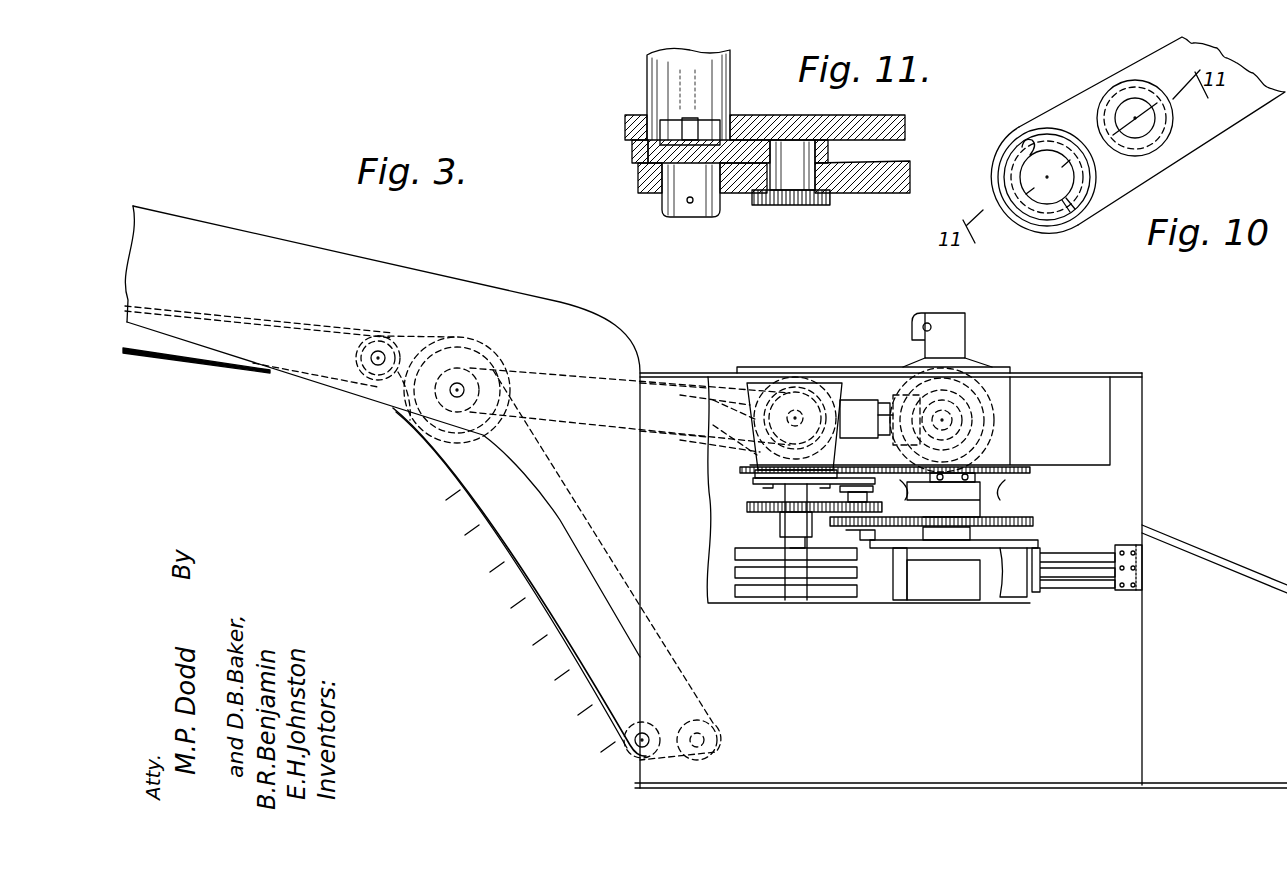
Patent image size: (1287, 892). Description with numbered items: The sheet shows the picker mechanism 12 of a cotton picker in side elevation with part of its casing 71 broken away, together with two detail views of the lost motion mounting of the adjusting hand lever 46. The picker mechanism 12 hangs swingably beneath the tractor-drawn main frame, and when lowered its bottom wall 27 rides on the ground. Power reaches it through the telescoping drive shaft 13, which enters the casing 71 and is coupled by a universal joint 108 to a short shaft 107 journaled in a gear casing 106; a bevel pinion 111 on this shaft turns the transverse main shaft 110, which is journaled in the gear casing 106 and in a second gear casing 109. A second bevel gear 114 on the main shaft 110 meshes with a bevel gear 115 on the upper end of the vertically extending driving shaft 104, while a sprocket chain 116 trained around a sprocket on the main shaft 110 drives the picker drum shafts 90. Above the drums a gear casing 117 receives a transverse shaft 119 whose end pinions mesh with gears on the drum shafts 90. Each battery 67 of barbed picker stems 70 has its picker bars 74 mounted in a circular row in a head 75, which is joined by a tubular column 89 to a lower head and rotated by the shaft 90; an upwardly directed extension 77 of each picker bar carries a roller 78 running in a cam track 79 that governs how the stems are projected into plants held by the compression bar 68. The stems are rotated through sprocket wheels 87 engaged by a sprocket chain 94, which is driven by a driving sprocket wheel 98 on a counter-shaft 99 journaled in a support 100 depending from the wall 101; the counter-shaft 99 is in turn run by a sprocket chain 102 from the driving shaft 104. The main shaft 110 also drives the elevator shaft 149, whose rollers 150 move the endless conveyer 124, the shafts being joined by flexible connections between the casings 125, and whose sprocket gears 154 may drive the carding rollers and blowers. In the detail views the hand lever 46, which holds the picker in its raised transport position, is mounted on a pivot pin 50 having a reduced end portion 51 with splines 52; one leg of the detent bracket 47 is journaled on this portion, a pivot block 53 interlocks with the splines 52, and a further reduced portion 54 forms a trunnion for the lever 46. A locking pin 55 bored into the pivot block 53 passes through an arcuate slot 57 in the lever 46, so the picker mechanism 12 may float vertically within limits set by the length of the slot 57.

In FIG. 3, the picker mechanism 12 is at (1145, 663).
In FIG. 3, the telescoping drive shaft 13 is at (1190, 541).
In FIG. 3, the bottom wall 27 is at (1218, 783).
In FIG. 11, the hand lever 46 is at (860, 193).
In FIG. 10, the hand lever 46 is at (1205, 137).
In FIG. 11, the detent bracket 47 is at (895, 113).
In FIG. 10, the detent bracket 47 is at (952, 101).
In FIG. 11, the pivot pin 50 is at (650, 58).
In FIG. 10, the pivot pin 50 is at (1023, 160).
In FIG. 11, the reduced end portion 51 is at (705, 118).
In FIG. 11, the splines 52 is at (668, 125).
In FIG. 10, the splines 52 is at (1013, 227).
In FIG. 11, the pivot block 53 is at (632, 150).
In FIG. 10, the pivot block 53 is at (1025, 126).
In FIG. 11, the further reduced portion 54 is at (662, 203).
In FIG. 10, the further reduced portion 54 is at (1050, 202).
In FIG. 11, the locking pin 55 is at (775, 204).
In FIG. 10, the locking pin 55 is at (1155, 143).
In FIG. 11, the arcuate slot 57 is at (795, 193).
In FIG. 10, the arcuate slot 57 is at (1116, 82).
In FIG. 3, the battery of picker stems 67 is at (1118, 590).
In FIG. 3, the compression bar 68 is at (1097, 586).
In FIG. 3, the picker stems 70 is at (872, 528).
In FIG. 3, the casing 71 is at (1133, 697).
In FIG. 3, the picker bars 74 is at (1020, 585).
In FIG. 3, the head 75 is at (1040, 546).
In FIG. 3, the upwardly directed extension 77 is at (1040, 522).
In FIG. 3, the roller 78 is at (1022, 468).
In FIG. 3, the cam track 79 is at (1047, 513).
In FIG. 3, the sprocket wheels 87 is at (885, 530).
In FIG. 3, the tubular column 89 is at (930, 601).
In FIG. 3, the shaft 90 is at (985, 505).
In FIG. 3, the sprocket chain 94 is at (1040, 532).
In FIG. 3, the driving sprocket wheel 98 is at (783, 532).
In FIG. 3, the counter-shaft 99 is at (832, 548).
In FIG. 3, the support 100 is at (790, 510).
In FIG. 3, the wall 101 is at (757, 474).
In FIG. 3, the sprocket chain 102 is at (757, 490).
In FIG. 3, the driving shaft 104 is at (740, 553).
In FIG. 3, the gear casing 106 is at (856, 405).
In FIG. 3, the short shaft 107 is at (827, 367).
In FIG. 3, the universal joint 108 is at (960, 352).
In FIG. 3, the second gear casing 109 is at (757, 400).
In FIG. 3, the transverse main shaft 110 is at (770, 380).
In FIG. 3, the bevel pinion 111 is at (790, 375).
In FIG. 3, the second bevel gear 114 is at (692, 366).
In FIG. 3, the bevel gear 115 is at (702, 418).
In FIG. 3, the sprocket chain 116 is at (862, 392).
In FIG. 3, the gear casing 117 is at (1003, 410).
In FIG. 3, the transverse shaft 119 is at (985, 372).
In FIG. 3, the endless conveyer 124 is at (482, 535).
In FIG. 3, the casings 125 is at (277, 362).
In FIG. 3, the elevator shaft 149 is at (397, 415).
In FIG. 3, the rollers 150 is at (452, 446).
In FIG. 3, the sprocket gears 154 is at (418, 420).